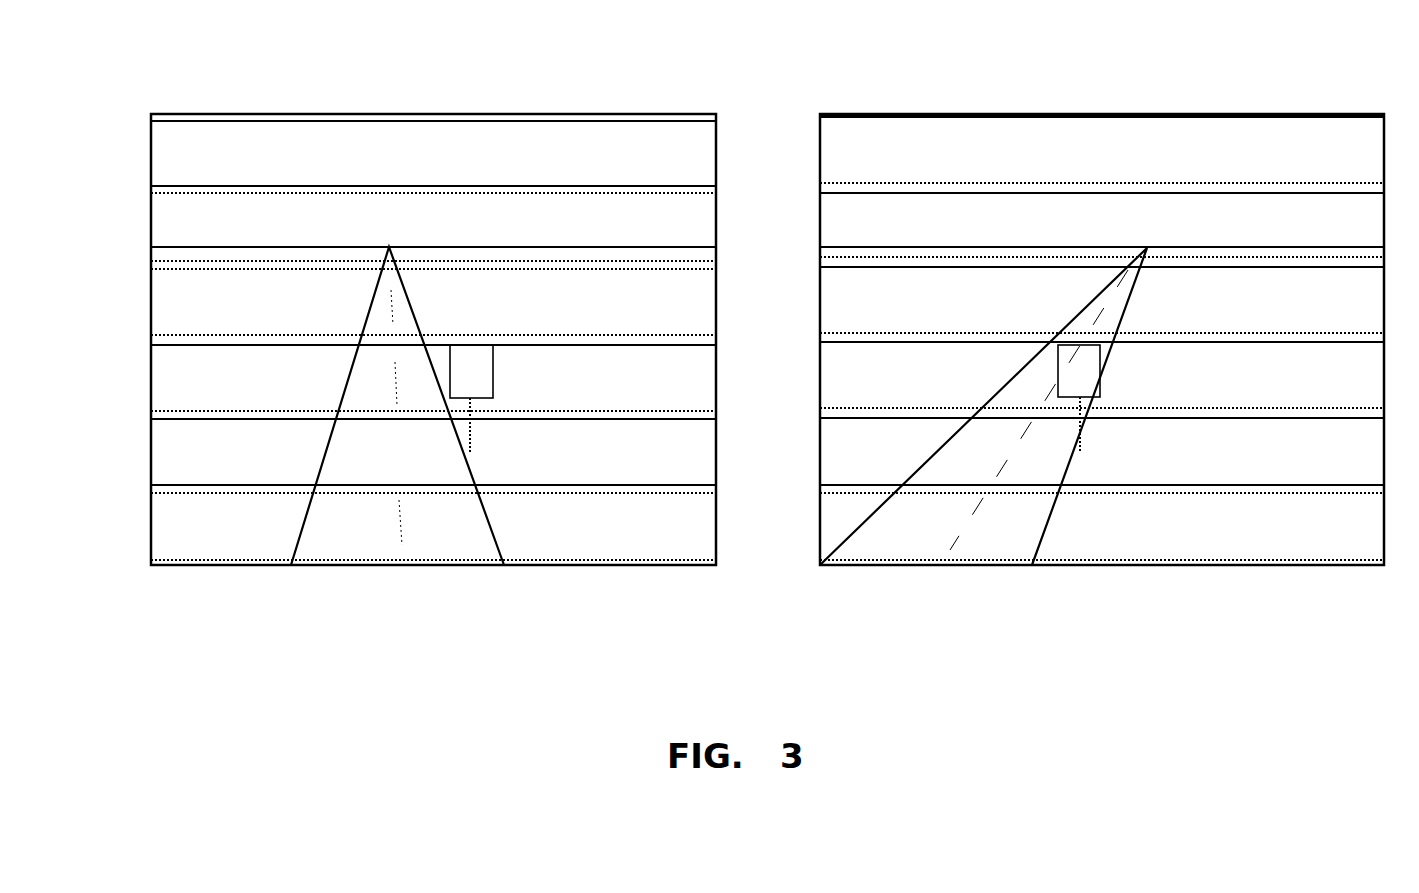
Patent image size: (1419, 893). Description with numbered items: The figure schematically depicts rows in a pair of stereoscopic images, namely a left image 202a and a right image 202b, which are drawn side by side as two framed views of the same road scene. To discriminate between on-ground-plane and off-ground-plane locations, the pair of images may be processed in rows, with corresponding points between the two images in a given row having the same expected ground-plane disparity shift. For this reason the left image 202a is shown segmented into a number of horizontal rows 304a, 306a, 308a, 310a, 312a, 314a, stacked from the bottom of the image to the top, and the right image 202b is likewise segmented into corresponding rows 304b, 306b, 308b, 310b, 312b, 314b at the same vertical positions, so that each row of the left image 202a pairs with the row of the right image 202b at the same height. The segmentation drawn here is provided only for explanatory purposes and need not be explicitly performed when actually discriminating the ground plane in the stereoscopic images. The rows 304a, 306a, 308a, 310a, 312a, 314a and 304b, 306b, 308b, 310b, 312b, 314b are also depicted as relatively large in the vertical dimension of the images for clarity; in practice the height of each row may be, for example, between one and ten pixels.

The left image 202a is at (433, 113).
The right image 202b is at (1126, 114).
The row 314a is at (158, 146).
The row 312a is at (158, 226).
The row 310a is at (158, 296).
The row 308a is at (158, 384).
The row 306a is at (158, 452).
The row 304a is at (158, 534).
The row 314b is at (828, 150).
The row 312b is at (828, 230).
The row 310b is at (828, 300).
The row 308b is at (828, 388).
The row 306b is at (828, 456).
The row 304b is at (828, 538).